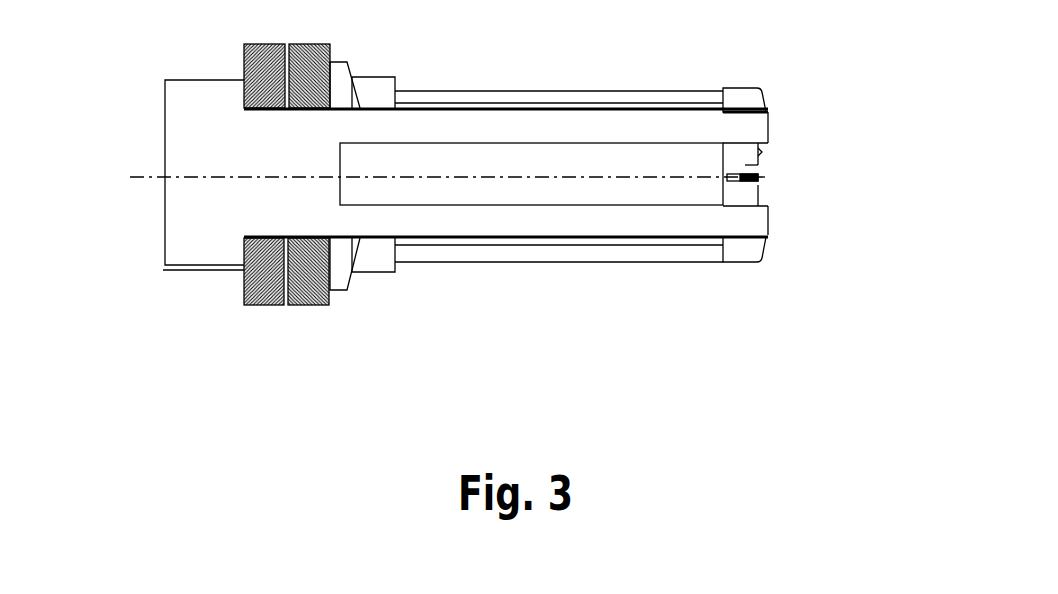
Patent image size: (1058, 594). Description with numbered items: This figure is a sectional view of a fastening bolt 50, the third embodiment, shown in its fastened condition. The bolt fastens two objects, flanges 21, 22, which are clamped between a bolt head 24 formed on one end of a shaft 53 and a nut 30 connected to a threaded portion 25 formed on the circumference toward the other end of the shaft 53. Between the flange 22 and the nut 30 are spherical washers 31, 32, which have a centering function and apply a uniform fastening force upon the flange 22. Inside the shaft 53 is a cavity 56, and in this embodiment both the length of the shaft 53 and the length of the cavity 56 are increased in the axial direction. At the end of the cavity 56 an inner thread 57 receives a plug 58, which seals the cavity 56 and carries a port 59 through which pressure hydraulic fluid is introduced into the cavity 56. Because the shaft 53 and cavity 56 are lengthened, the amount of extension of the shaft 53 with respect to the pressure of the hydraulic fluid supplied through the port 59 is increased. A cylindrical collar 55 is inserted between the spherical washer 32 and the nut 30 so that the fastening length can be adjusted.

The fastening bolt 50 is at (678, 32).
The bolt head 24 is at (187, 120).
The flange 21 is at (242, 285).
The flange 22 is at (329, 292).
The spherical washer 31 is at (343, 277).
The spherical washer 32 is at (383, 274).
The shaft 53 is at (553, 223).
The cavity 56 is at (488, 160).
The threaded portion 25 is at (776, 234).
The inner thread 57 is at (770, 152).
The plug 58 is at (766, 163).
The port 59 is at (774, 186).
The cylindrical collar 55 is at (680, 271).
The nut 30 is at (740, 252).